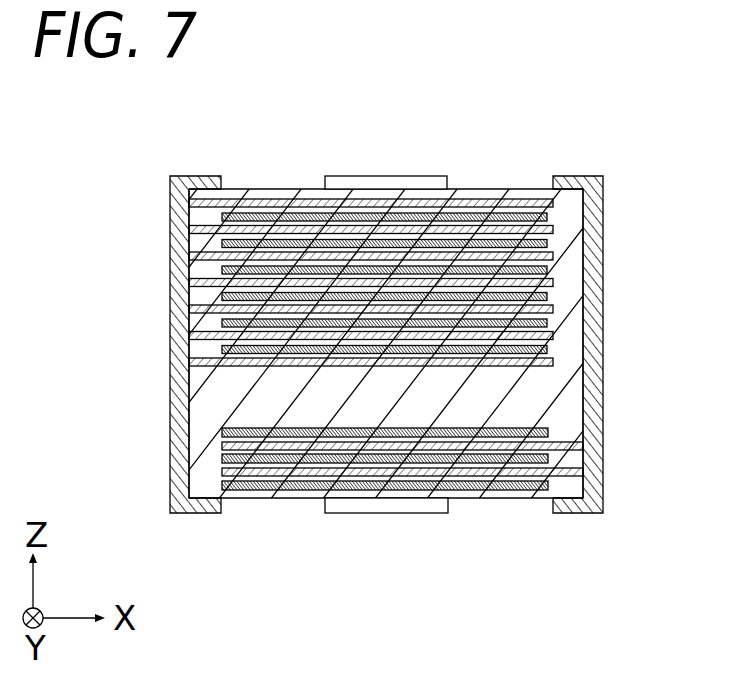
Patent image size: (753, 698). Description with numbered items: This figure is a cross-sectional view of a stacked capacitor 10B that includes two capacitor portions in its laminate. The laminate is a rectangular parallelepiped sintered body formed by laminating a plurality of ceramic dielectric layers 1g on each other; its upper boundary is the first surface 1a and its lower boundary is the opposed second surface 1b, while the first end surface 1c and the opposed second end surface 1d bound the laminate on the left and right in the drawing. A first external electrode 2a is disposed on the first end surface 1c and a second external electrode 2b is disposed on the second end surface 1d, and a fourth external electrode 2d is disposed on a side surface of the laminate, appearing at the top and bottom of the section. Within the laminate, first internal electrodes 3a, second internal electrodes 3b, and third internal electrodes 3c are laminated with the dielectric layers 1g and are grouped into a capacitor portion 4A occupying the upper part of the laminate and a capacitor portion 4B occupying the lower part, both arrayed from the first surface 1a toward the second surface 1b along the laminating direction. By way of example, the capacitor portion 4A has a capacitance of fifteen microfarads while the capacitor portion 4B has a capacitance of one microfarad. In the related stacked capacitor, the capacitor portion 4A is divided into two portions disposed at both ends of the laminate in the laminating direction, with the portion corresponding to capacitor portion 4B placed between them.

The stacked capacitor 10B is at (456, 94).
The first surface 1a is at (470, 192).
The second surface 1b is at (528, 500).
The first end surface 1c is at (192, 398).
The second end surface 1d is at (603, 398).
The dielectric layer 1g is at (268, 195).
The first external electrode 2a is at (198, 185).
The second external electrode 2b is at (600, 178).
The fourth external electrode 2d is at (350, 175).
The first internal electrode 3a is at (225, 217).
The second internal electrode 3b is at (488, 202).
The third internal electrode 3c is at (198, 351).
The capacitor portion 4A is at (388, 237).
The capacitor portion 4B is at (390, 421).